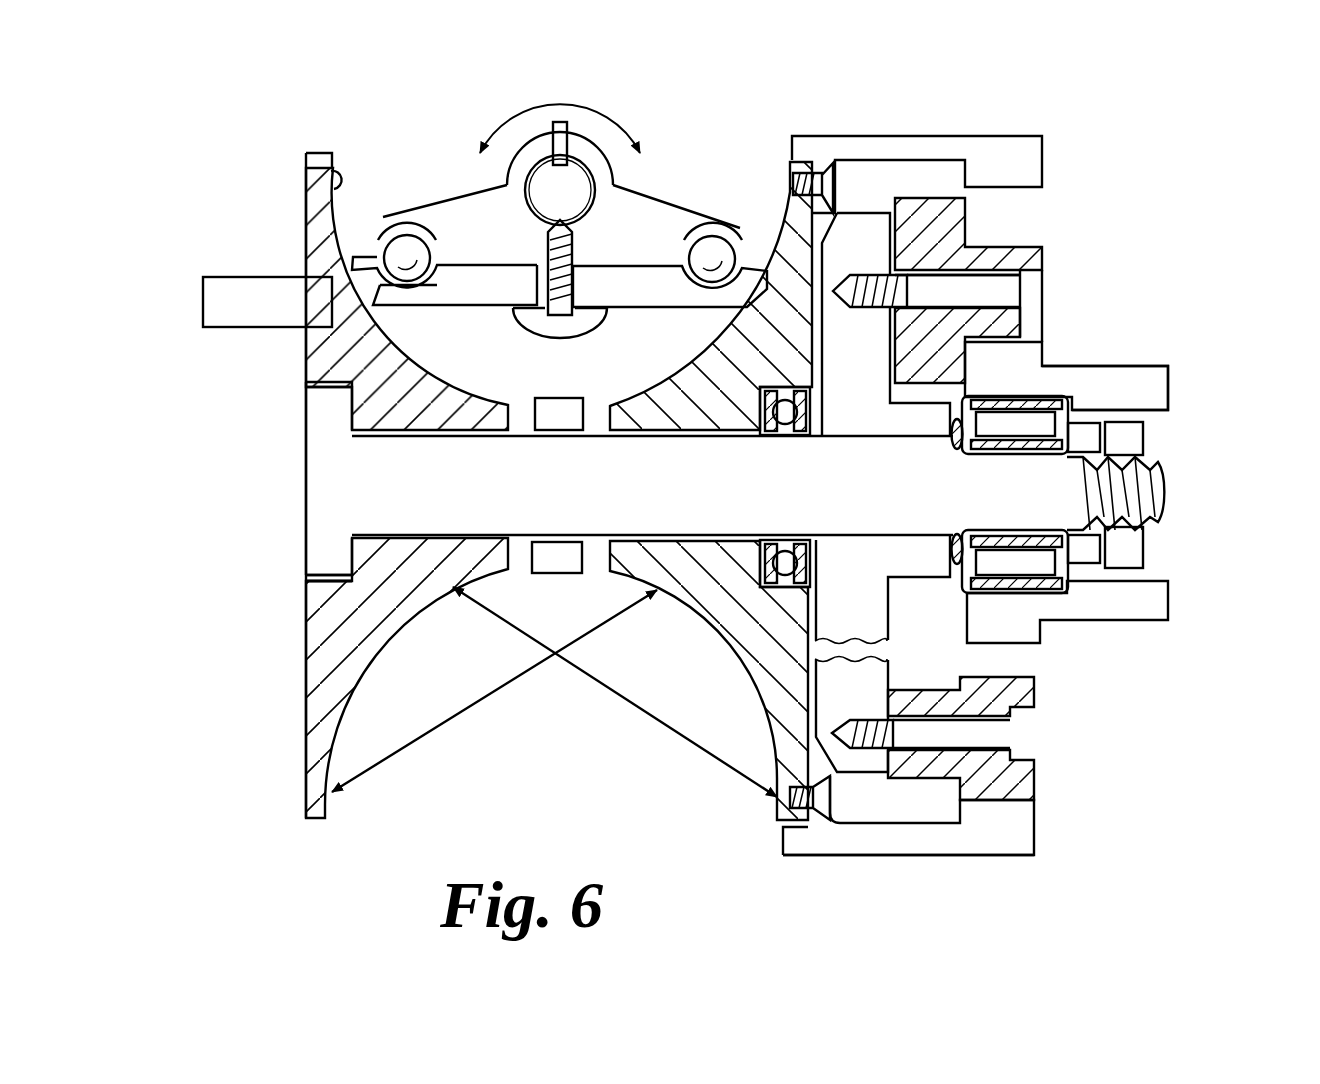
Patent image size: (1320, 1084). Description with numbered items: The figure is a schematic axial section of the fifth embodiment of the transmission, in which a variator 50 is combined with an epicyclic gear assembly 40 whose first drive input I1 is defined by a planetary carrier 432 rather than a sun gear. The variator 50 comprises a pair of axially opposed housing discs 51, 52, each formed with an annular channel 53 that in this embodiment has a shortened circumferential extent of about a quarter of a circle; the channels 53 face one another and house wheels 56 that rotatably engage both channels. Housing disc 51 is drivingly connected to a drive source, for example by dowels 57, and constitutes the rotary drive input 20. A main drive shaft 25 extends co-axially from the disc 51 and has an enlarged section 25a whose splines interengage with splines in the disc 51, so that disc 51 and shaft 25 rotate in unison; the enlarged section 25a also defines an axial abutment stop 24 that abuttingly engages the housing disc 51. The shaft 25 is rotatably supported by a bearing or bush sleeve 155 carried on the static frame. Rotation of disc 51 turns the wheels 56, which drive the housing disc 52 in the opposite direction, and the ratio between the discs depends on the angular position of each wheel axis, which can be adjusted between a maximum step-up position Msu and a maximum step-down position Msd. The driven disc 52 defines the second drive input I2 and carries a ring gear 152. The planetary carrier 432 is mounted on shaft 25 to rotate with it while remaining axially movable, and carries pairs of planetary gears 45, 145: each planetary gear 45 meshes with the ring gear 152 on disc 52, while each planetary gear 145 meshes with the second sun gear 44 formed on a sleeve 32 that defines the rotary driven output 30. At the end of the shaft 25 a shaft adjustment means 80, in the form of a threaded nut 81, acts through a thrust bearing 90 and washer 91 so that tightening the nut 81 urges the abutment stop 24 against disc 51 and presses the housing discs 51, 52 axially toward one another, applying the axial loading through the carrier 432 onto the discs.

The rotary drive input 20 is at (260, 513).
The axial abutment stop 24 is at (373, 565).
The main drive shaft 25 is at (453, 501).
The enlarged section 25a is at (318, 558).
The rotary driven output 30 is at (1172, 347).
The sleeve 32 is at (1128, 368).
The epicyclic gear assembly 40 is at (1072, 180).
The second sun gear 44 is at (1032, 628).
The planetary gear 45 is at (1044, 696).
The variator 50 is at (282, 122).
The housing disc 51 is at (300, 236).
The housing disc 52 is at (778, 165).
The annular channel 53 is at (328, 170).
The wheel 56 is at (480, 290).
The dowel 57 is at (272, 318).
The shaft adjustment means 80 is at (1185, 460).
The threaded nut 81 is at (1132, 550).
The thrust bearing 90 is at (1058, 600).
The washer 91 is at (1088, 558).
The planetary gear 145 is at (1056, 247).
The ring gear 152 is at (1018, 838).
The bearing or bush sleeve 155 is at (572, 400).
The planetary carrier 432 is at (880, 427).
The first drive input I1 is at (893, 660).
The second drive input I2 is at (812, 860).
The maximum step-up position Msu is at (407, 748).
The maximum step-down position Msd is at (720, 764).